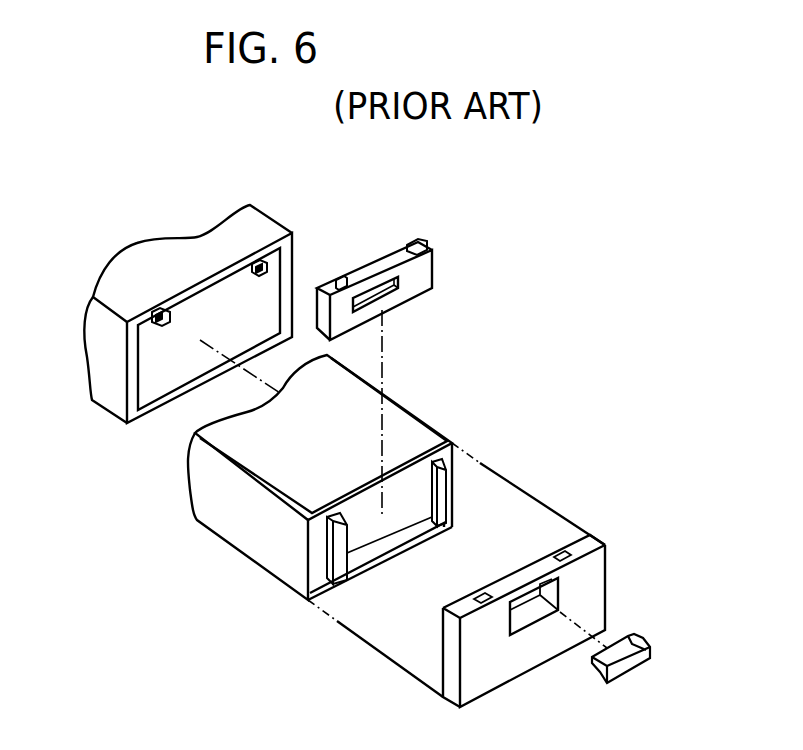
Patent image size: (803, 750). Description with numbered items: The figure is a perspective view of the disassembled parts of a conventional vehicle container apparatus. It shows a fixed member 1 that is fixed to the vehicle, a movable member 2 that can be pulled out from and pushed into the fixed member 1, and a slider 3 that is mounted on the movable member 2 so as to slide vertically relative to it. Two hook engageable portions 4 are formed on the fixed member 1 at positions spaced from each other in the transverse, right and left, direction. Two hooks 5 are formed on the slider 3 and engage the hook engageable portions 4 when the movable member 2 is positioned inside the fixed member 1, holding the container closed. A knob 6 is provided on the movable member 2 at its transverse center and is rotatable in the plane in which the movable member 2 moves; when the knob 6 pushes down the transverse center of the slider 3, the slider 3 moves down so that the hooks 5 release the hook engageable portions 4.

The fixed member 1 is at (110, 412).
The movable member 2 is at (445, 698).
The slider 3 is at (430, 270).
The hook engageable portions 4 is at (263, 262).
The hooks 5 is at (411, 242).
The knob 6 is at (620, 670).